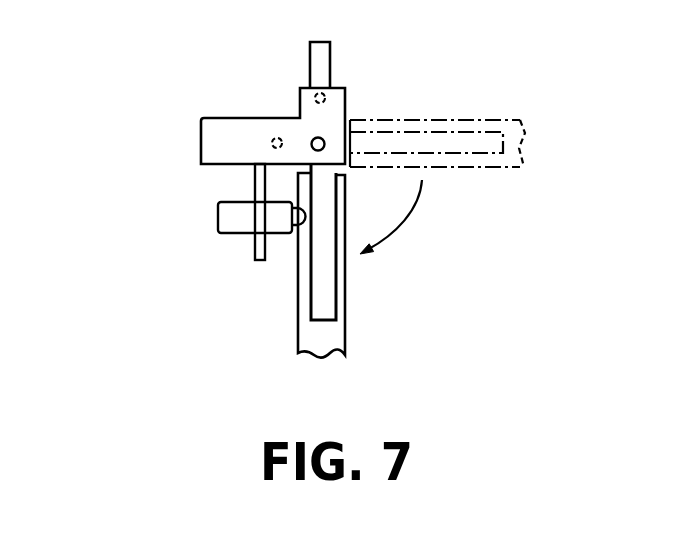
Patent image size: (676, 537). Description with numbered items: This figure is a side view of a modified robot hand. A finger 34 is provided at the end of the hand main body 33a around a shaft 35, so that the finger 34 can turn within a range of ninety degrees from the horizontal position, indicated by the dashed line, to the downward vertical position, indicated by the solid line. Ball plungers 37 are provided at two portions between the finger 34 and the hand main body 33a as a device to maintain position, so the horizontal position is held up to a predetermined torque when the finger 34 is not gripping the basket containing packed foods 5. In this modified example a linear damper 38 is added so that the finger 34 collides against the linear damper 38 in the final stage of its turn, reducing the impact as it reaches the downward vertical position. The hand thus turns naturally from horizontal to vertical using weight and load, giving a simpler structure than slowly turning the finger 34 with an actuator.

The basket containing packed foods 5 is at (347, 335).
The hand main body 33a is at (200, 149).
The finger 34 is at (457, 120).
The shaft 35 is at (325, 138).
The ball plunger 37 is at (315, 93).
The linear damper 38 is at (276, 230).